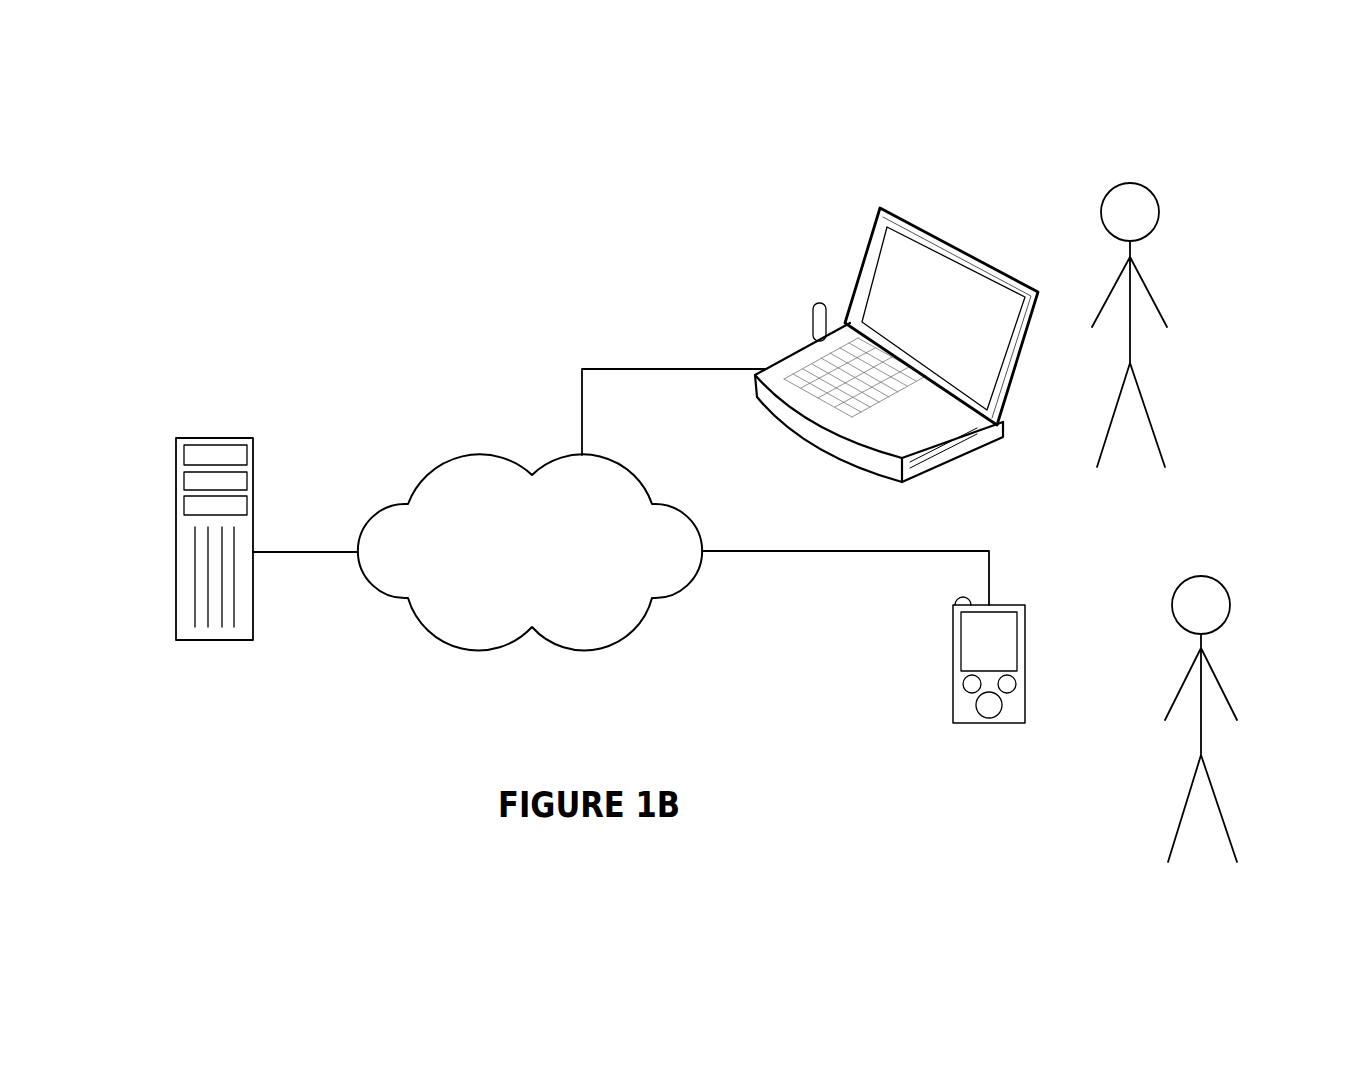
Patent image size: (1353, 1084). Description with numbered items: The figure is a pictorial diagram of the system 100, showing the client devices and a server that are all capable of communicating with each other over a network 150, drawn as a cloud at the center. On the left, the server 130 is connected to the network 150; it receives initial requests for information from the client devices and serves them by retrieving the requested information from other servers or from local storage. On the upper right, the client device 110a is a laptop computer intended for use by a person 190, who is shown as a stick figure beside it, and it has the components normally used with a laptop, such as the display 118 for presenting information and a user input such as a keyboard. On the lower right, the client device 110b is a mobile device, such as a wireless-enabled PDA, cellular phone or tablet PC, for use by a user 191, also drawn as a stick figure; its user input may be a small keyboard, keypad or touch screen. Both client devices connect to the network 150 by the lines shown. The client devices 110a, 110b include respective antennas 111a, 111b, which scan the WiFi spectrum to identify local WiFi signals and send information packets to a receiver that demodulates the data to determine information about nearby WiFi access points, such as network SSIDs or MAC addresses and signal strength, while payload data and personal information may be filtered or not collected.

The system 100 is at (221, 138).
The server 130 is at (177, 452).
The network 150 is at (480, 453).
The client device 110a is at (877, 315).
The display 118 is at (868, 262).
The antenna 111a is at (813, 318).
The client device 110b is at (988, 651).
The antenna 111b is at (953, 601).
The person 190 is at (1157, 272).
The user 191 is at (1227, 650).